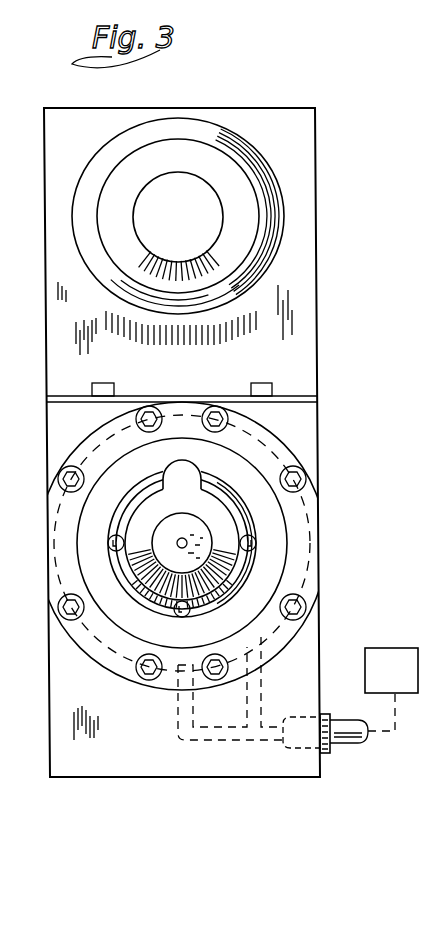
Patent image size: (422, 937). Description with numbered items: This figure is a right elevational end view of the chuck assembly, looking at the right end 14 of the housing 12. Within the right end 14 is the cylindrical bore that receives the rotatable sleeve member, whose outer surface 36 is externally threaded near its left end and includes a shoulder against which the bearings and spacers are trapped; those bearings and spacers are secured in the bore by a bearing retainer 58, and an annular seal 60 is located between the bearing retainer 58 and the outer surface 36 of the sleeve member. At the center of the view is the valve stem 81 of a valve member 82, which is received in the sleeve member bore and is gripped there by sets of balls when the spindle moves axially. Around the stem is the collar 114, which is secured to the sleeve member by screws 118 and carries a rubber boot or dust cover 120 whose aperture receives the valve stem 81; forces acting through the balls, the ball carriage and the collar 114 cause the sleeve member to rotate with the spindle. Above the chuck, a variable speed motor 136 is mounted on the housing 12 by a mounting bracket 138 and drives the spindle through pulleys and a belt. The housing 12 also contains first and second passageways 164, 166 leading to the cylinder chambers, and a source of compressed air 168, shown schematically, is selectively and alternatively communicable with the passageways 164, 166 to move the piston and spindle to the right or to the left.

The housing 12 is at (60, 759).
The right end 14 is at (48, 736).
The outer surface 36 is at (237, 487).
The bearing retainer 58 is at (282, 628).
The annular seal 60 is at (194, 629).
The valve stem 81 is at (181, 539).
The valve member 82 is at (213, 530).
The collar 114 is at (88, 652).
The screws 118 is at (256, 543).
The rubber boot or dust cover 120 is at (236, 590).
The variable speed motor 136 is at (185, 124).
The mounting bracket 138 is at (292, 363).
The first passageway 164 is at (262, 707).
The second passageway 166 is at (177, 722).
The source of compressed air 168 is at (407, 653).